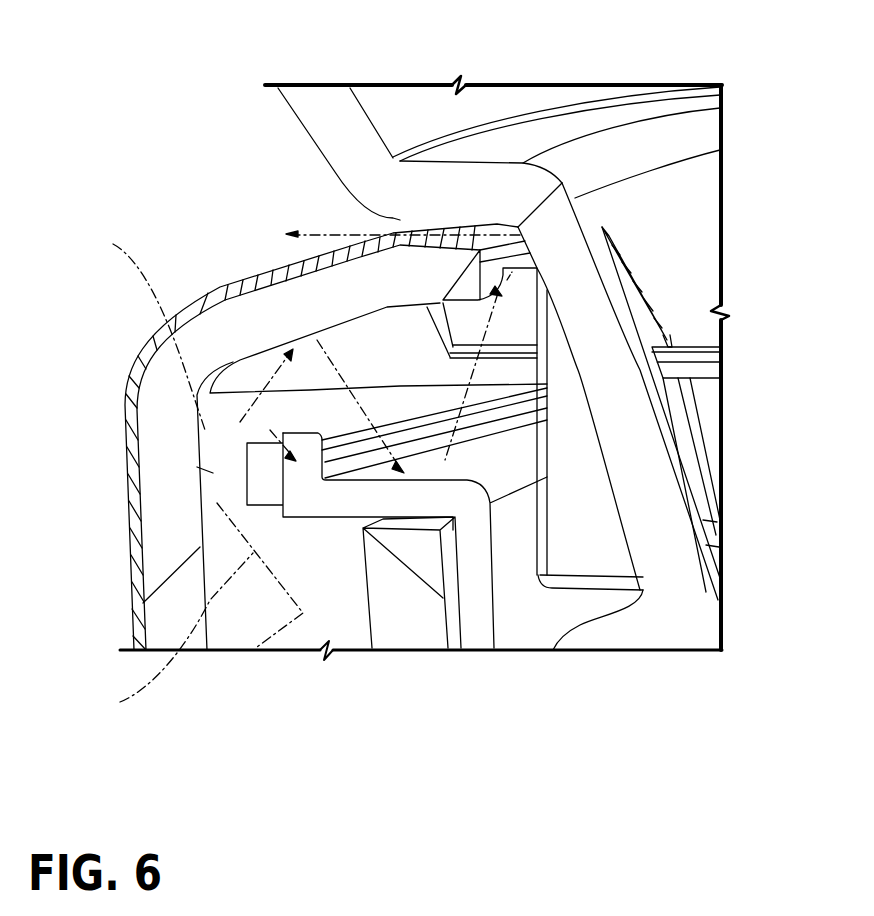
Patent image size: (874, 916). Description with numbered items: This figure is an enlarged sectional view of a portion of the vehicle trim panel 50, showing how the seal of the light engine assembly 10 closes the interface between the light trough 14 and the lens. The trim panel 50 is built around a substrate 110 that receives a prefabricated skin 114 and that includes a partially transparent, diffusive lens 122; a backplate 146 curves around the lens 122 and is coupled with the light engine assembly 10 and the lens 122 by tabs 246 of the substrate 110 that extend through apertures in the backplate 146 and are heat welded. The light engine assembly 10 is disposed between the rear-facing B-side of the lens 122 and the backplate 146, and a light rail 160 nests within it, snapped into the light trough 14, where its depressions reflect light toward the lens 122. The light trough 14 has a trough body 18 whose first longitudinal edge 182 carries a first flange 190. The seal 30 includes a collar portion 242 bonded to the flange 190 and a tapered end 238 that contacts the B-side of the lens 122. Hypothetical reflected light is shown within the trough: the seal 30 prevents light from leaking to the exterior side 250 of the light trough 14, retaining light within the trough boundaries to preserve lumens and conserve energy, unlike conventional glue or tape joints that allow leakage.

The light engine assembly 10 is at (239, 596).
The light trough 14 is at (465, 656).
The trough body 18 is at (510, 593).
The seal 30 is at (208, 496).
The trim panel 50 is at (211, 91).
The substrate 110 is at (177, 520).
The skin 114 is at (132, 473).
The lens 122 is at (178, 623).
The backplate 146 is at (650, 217).
The light rail 160 is at (403, 603).
The first longitudinal edge 182 is at (294, 462).
The first flange 190 is at (340, 445).
The tapered end 238 is at (247, 493).
The collar portion 242 is at (250, 470).
The tabs 246 is at (697, 372).
The exterior side 250 is at (368, 354).